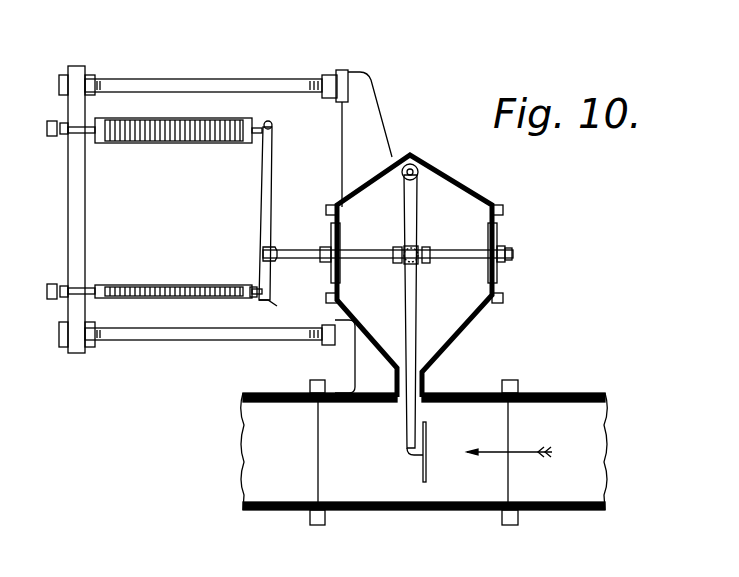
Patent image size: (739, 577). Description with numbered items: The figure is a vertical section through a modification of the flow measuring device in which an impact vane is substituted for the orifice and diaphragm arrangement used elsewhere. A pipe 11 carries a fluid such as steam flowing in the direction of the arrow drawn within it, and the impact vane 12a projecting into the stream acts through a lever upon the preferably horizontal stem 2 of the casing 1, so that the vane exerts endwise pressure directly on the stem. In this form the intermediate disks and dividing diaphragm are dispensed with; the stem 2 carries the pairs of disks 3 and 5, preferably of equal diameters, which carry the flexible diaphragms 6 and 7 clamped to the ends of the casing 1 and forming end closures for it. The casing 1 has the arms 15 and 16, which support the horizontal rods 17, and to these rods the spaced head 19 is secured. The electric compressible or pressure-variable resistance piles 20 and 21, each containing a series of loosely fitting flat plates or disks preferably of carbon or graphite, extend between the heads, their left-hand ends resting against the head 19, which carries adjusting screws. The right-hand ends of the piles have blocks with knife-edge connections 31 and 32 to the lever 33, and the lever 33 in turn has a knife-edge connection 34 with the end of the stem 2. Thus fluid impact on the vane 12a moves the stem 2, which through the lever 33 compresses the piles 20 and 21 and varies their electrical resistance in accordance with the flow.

The casing 1 is at (445, 166).
The stem 2 is at (360, 250).
The disks 3 is at (330, 274).
The disks 5 is at (500, 275).
The flexible diaphragm 6 is at (330, 221).
The flexible diaphragm 7 is at (497, 222).
The pipe 11 is at (424, 452).
The vane 12a is at (428, 465).
The arm 15 is at (364, 138).
The arm 16 is at (338, 356).
The horizontal rods 17 is at (202, 85).
The head 19 is at (78, 228).
The pressure-variable resistance pile 20 is at (193, 143).
The pressure-variable resistance pile 21 is at (138, 283).
The knife-edge connection 31 is at (272, 125).
The knife-edge connection 32 is at (268, 300).
The lever 33 is at (267, 185).
The knife-edge connection 34 is at (275, 250).